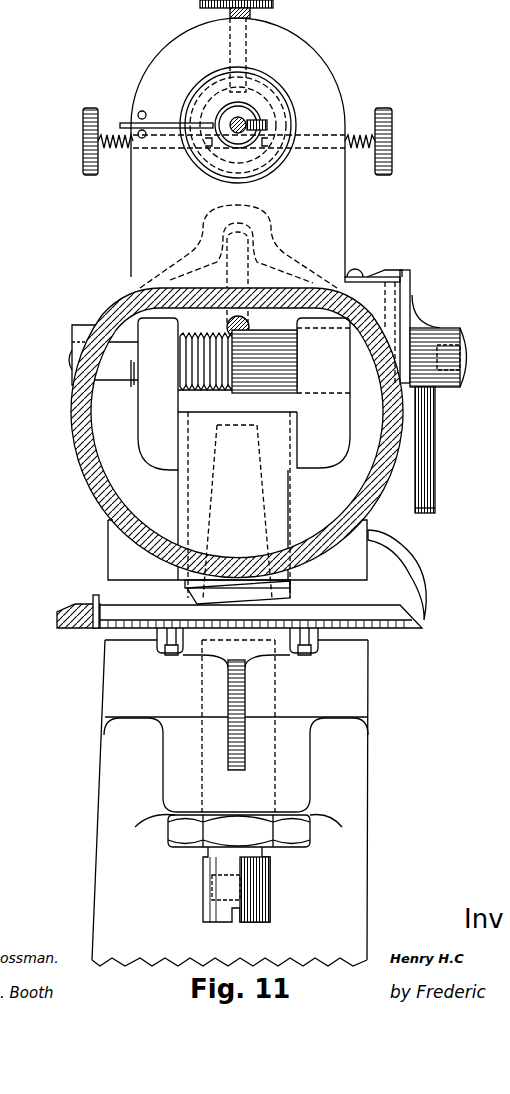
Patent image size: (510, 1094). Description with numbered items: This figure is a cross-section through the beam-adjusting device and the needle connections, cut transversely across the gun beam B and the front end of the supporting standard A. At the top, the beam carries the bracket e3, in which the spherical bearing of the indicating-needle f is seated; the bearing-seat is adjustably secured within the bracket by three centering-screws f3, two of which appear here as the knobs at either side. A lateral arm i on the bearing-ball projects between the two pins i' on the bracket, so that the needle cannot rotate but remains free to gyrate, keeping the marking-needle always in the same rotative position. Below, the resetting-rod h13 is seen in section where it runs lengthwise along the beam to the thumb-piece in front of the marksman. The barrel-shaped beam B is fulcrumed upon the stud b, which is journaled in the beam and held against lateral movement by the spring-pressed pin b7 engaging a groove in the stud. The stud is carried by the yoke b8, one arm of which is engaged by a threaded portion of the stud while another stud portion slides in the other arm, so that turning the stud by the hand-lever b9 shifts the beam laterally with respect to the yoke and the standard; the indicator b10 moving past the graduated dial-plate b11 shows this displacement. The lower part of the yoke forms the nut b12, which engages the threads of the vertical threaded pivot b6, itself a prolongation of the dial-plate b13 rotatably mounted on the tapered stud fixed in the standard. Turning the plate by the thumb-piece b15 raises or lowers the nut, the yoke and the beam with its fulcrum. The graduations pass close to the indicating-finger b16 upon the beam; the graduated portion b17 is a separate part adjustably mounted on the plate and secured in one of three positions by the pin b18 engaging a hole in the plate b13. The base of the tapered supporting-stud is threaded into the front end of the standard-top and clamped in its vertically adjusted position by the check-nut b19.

The bracket e3 is at (320, 53).
The indicating-needle f is at (247, 120).
The centering-screws f3 is at (390, 136).
The lateral arm i is at (166, 108).
The pins i' is at (126, 130).
The resetting-rod h13 is at (265, 290).
The gun beam B is at (87, 470).
The stud b is at (112, 373).
The yoke b8 is at (150, 450).
The nut b12 is at (298, 470).
The spring-pressed pin b7 is at (395, 285).
The graduated dial-plate b11 is at (412, 295).
The indicator b10 is at (413, 313).
The hand-lever b9 is at (438, 466).
The threaded pivot b6 is at (290, 598).
The dial-plate b13 is at (76, 628).
The graduated portion b17 is at (60, 609).
The pin b18 is at (93, 597).
The indicating-finger b16 is at (427, 578).
The thumb-piece b15 is at (248, 686).
The check-nut b19 is at (180, 845).
The standard A is at (357, 883).